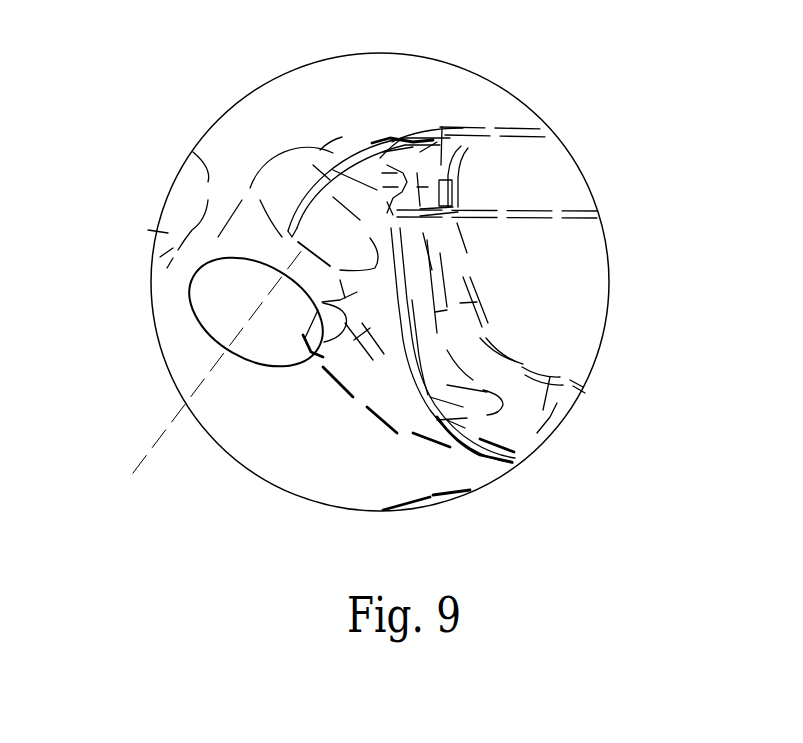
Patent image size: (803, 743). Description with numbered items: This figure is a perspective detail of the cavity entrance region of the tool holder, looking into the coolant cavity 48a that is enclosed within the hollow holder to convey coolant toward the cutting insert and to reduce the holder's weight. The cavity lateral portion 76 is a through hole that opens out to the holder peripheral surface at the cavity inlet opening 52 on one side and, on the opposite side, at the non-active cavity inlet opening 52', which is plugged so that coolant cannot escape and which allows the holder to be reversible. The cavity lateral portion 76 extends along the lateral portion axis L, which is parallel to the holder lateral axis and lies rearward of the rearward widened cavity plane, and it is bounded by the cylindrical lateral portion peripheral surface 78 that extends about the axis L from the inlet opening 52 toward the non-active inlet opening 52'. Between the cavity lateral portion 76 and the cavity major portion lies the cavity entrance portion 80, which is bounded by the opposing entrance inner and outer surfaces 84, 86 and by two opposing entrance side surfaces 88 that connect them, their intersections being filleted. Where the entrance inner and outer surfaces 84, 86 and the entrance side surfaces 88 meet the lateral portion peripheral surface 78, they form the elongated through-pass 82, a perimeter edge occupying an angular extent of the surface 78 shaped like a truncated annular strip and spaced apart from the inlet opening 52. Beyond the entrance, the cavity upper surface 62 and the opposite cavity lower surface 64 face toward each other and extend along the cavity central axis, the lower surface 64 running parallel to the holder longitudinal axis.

The cavity inlet opening 52 is at (168, 260).
The non-active cavity inlet opening 52' is at (358, 105).
The cavity lateral portion 76 is at (293, 170).
The entrance outer surface 86 is at (381, 131).
The cavity upper surface 62 is at (557, 178).
The coolant cavity 48a is at (565, 278).
The lateral portion peripheral surface 78 is at (246, 300).
The through-pass 82 is at (300, 247).
The entrance side surfaces 88 is at (340, 355).
The entrance inner surface 84 is at (375, 383).
The cavity entrance portion 80 is at (399, 412).
The cavity lower surface 64 is at (524, 443).
The lateral portion axis L is at (145, 457).